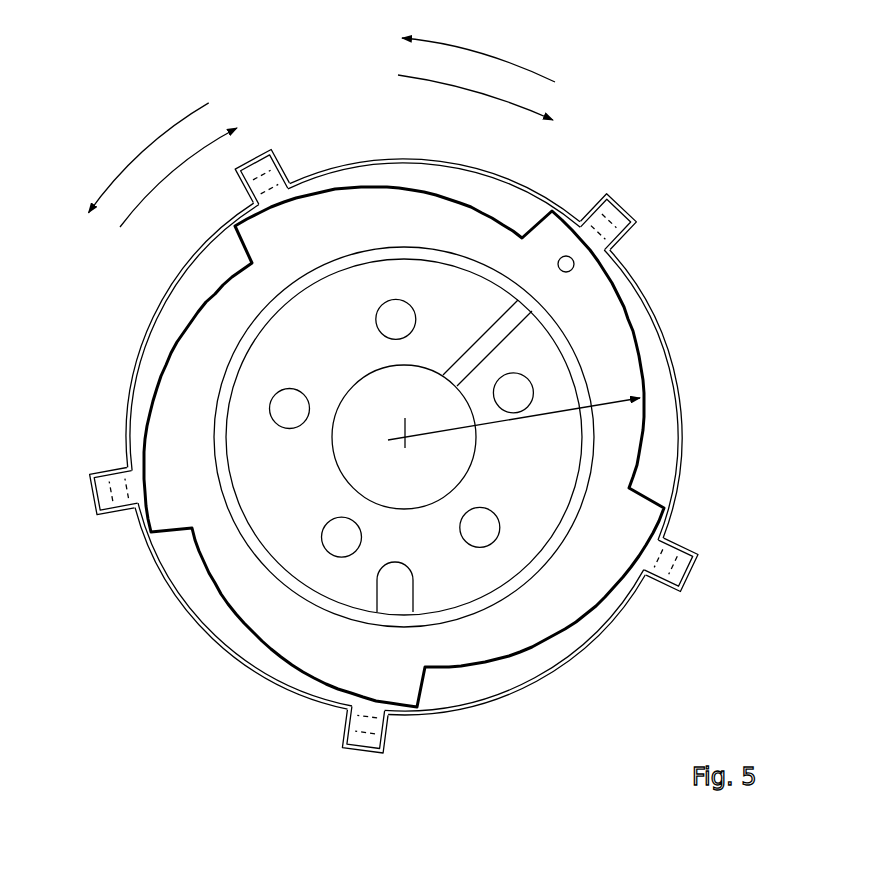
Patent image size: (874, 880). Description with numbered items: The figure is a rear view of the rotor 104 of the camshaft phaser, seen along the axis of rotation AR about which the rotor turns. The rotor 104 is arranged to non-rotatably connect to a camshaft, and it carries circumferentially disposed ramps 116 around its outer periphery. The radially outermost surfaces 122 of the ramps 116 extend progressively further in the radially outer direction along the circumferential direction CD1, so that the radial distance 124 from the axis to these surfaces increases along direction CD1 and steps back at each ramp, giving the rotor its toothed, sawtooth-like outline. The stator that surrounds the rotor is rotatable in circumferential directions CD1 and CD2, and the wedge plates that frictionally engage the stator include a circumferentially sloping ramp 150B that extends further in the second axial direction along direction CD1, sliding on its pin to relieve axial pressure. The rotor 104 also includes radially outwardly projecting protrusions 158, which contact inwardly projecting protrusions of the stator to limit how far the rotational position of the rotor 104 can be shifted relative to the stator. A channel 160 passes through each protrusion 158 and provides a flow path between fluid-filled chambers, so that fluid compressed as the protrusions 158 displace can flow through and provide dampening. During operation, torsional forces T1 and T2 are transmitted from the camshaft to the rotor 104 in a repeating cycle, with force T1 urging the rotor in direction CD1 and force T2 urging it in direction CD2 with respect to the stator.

The rotor 104 is at (741, 167).
The ramps 116 is at (668, 518).
The radially outermost surfaces 122 is at (570, 620).
The radial distance 124 is at (610, 406).
The circumferentially sloping ramp 150B is at (578, 274).
The radially outwardly projecting protrusion 158 is at (692, 568).
The channel 160 is at (630, 215).
The axis of rotation AR is at (405, 432).
The circumferential direction CD1 is at (140, 153).
The circumferential direction CD2 is at (208, 142).
The torsional force T1 is at (477, 50).
The torsional force T2 is at (522, 108).